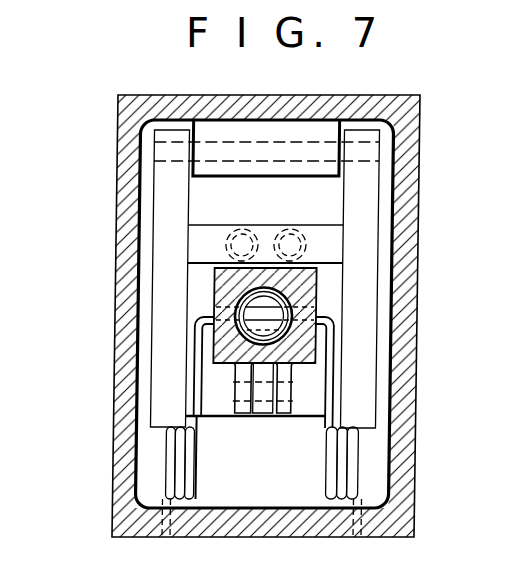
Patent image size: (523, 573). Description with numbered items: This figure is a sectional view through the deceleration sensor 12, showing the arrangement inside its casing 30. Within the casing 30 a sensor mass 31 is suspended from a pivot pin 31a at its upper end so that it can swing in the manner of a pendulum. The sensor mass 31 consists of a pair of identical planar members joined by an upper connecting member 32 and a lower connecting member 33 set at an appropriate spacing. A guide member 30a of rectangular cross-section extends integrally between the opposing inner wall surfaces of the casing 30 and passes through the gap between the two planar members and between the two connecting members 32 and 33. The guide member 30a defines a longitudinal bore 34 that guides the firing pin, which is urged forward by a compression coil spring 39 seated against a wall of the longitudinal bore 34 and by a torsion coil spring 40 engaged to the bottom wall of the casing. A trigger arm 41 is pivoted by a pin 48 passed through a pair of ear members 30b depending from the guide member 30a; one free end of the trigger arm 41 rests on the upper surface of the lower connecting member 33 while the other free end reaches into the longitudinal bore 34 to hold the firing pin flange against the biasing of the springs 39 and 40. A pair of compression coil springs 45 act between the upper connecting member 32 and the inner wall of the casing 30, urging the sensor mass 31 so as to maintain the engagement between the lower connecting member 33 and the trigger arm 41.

The deceleration sensor 12 is at (99, 122).
The casing 30 is at (136, 185).
The guide member 30a is at (310, 347).
The ear members 30b is at (285, 417).
The sensor mass 31 is at (347, 201).
The pivot pin 31a is at (217, 143).
The connecting member 32 is at (200, 247).
The connecting member 33 is at (221, 417).
The longitudinal bore 34 is at (304, 300).
The compression coil spring 39 is at (245, 304).
The torsion coil spring 40 is at (196, 368).
The trigger arm 41 is at (263, 417).
The compression coil springs 45 is at (287, 229).
The pin 48 is at (288, 391).